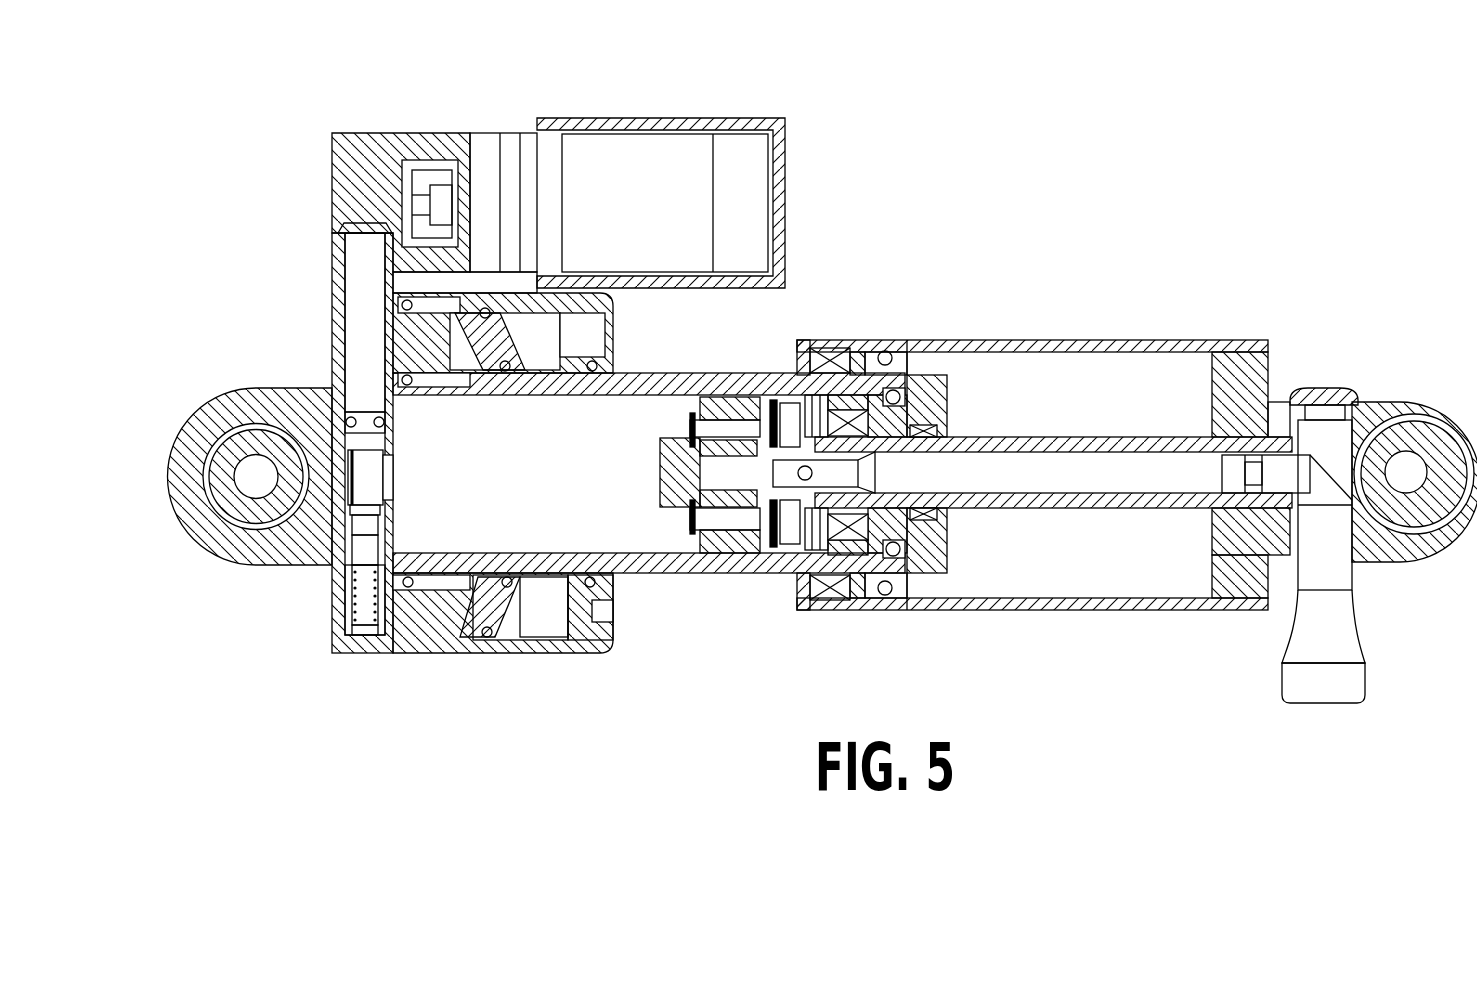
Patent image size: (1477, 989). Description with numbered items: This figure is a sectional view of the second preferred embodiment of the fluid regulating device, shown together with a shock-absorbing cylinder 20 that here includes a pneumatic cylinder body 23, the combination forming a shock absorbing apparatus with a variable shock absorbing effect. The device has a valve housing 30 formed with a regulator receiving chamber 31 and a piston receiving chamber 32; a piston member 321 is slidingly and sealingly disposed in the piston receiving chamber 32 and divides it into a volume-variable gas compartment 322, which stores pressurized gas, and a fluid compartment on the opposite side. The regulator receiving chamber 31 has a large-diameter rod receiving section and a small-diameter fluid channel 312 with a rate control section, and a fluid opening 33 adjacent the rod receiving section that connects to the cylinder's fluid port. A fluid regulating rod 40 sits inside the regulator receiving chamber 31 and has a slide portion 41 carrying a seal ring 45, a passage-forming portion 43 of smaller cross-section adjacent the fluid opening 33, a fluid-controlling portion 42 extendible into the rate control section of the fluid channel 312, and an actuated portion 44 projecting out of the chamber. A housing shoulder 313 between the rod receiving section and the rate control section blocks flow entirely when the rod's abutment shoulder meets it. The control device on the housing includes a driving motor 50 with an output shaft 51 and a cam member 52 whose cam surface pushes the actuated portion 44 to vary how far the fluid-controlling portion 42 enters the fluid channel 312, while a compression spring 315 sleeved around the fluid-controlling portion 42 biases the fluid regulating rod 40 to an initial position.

The shock-absorbing cylinder 20 is at (1045, 330).
The pneumatic cylinder body 23 is at (735, 378).
The valve housing 30 is at (615, 628).
The regulator receiving chamber 31 is at (390, 585).
The piston receiving chamber 32 is at (462, 636).
The fluid opening 33 is at (233, 392).
The fluid regulating rod 40 is at (332, 353).
The slide portion 41 is at (355, 478).
The fluid-controlling portion 42 is at (357, 543).
The passage-forming portion 43 is at (350, 505).
The actuated portion 44 is at (358, 305).
The seal ring 45 is at (390, 470).
The driving motor 50 is at (775, 118).
The output shaft 51 is at (440, 195).
The cam member 52 is at (367, 188).
The fluid channel 312 is at (367, 623).
The housing shoulder 313 is at (363, 552).
The compression spring 315 is at (353, 603).
The piston member 321 is at (503, 607).
The gas compartment 322 is at (557, 622).